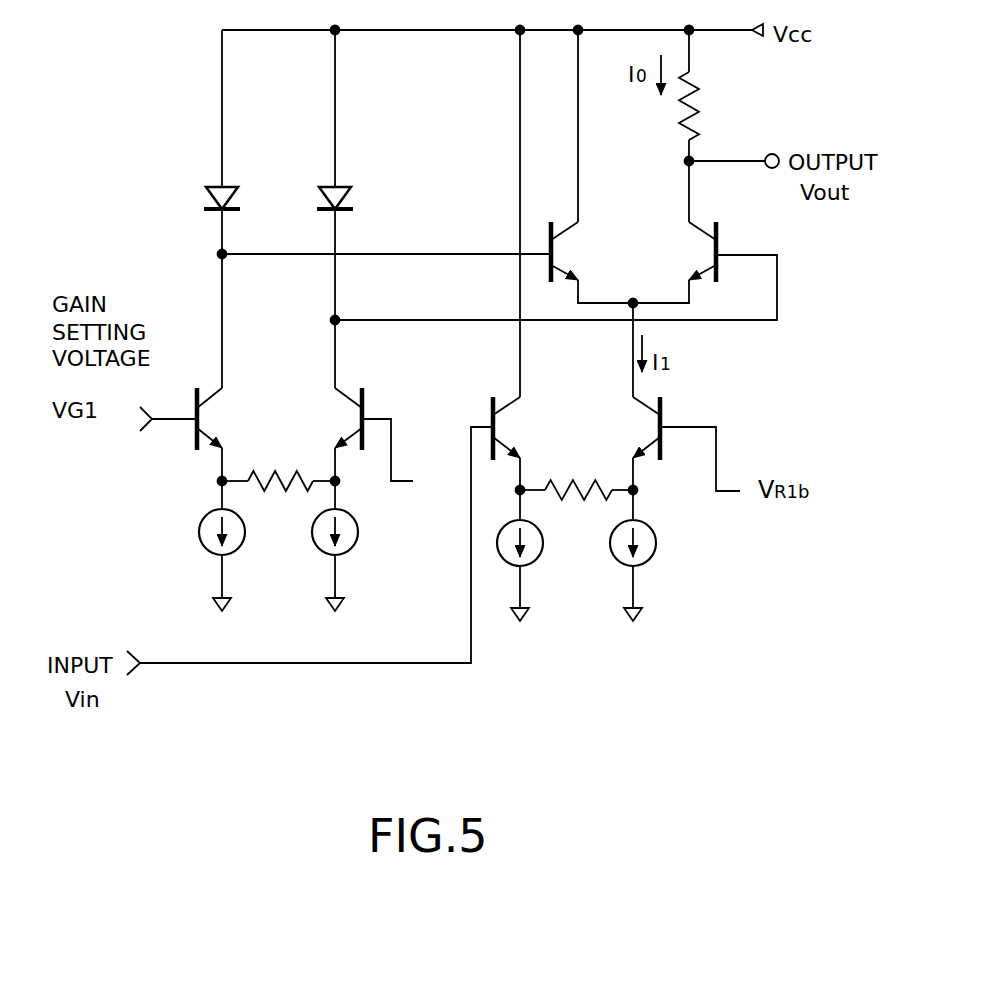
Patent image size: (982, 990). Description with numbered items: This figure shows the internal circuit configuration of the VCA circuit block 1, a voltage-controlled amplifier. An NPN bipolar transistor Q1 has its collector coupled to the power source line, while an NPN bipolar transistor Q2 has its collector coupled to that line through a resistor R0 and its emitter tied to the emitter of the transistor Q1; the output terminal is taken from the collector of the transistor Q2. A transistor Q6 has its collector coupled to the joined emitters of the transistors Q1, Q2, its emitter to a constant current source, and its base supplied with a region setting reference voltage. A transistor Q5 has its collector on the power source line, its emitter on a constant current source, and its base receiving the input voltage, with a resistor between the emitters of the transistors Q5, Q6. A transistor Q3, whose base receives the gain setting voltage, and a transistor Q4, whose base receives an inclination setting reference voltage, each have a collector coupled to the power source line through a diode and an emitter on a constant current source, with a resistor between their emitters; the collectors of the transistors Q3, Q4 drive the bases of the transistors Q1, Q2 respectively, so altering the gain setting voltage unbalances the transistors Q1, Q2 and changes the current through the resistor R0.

The VCA circuit block 1 is at (218, 183).
The NPN bipolar transistor Q1 is at (577, 252).
The NPN bipolar transistor Q2 is at (685, 252).
The NPN bipolar transistor Q3 is at (180, 427).
The NPN bipolar transistor Q4 is at (374, 412).
The NPN bipolar transistor Q5 is at (522, 428).
The NPN bipolar transistor Q6 is at (633, 428).
The resistor R0 is at (705, 95).